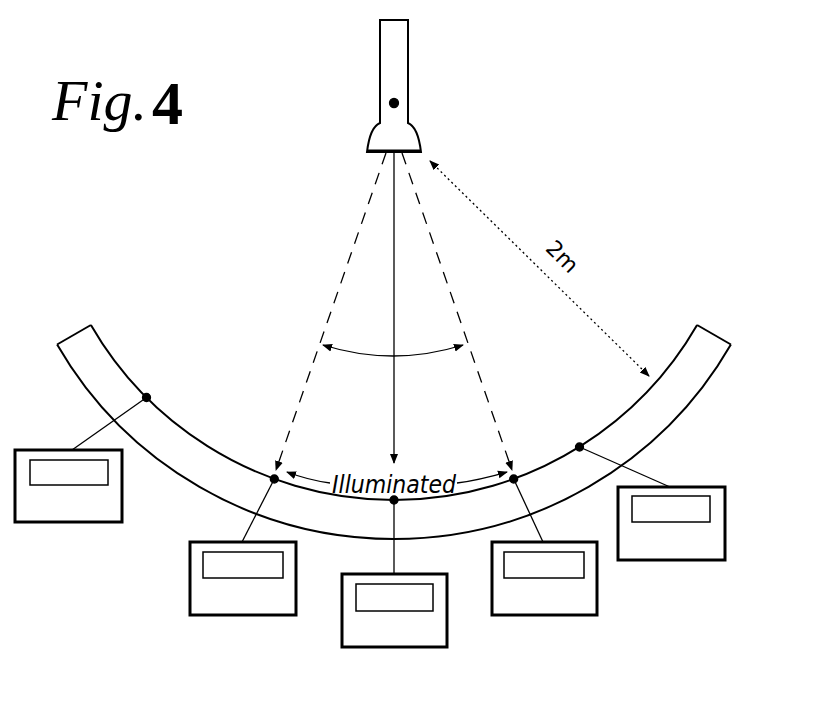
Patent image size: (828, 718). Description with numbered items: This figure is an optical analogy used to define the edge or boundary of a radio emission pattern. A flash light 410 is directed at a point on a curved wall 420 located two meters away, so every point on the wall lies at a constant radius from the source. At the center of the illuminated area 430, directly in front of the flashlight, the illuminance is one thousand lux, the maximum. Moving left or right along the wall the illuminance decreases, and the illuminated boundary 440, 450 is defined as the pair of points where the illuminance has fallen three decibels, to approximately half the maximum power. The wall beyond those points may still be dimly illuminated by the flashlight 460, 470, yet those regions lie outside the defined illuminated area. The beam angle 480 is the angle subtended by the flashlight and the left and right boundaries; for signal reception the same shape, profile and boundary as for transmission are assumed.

The flash light 410 is at (408, 73).
The curved wall 420 is at (88, 326).
The center of the illuminated area 430 is at (423, 647).
The illuminated boundary 440 is at (260, 615).
The illuminated boundary 450 is at (568, 615).
The dimly illuminated wall region 460 is at (97, 522).
The dimly illuminated wall region 470 is at (697, 560).
The beam angle 480 is at (394, 311).